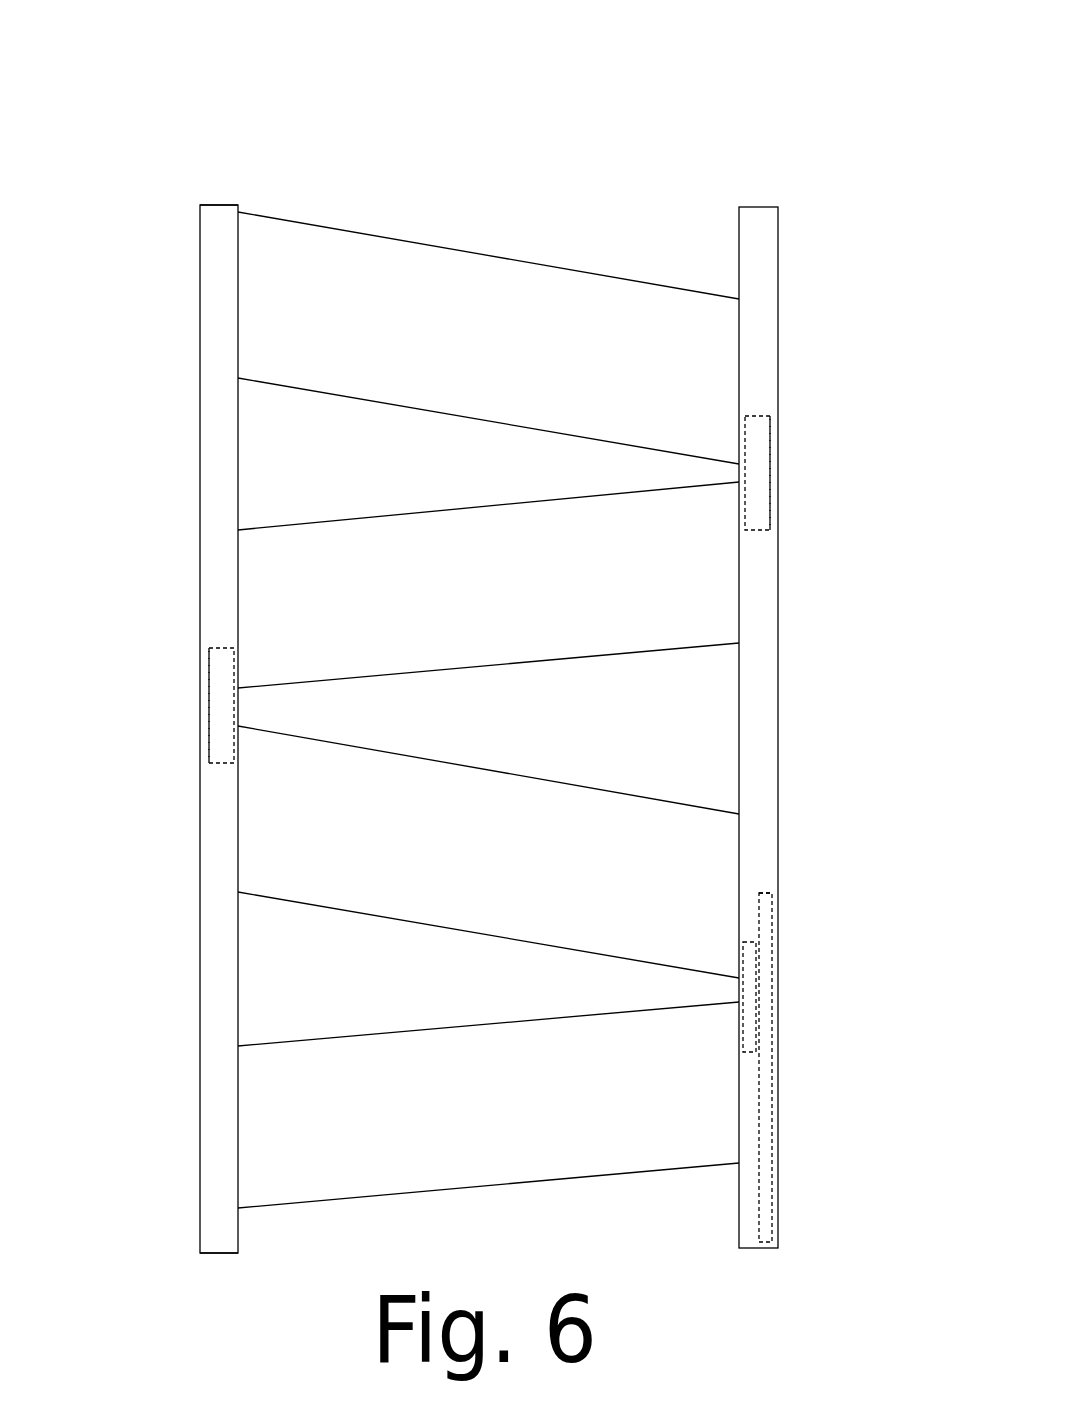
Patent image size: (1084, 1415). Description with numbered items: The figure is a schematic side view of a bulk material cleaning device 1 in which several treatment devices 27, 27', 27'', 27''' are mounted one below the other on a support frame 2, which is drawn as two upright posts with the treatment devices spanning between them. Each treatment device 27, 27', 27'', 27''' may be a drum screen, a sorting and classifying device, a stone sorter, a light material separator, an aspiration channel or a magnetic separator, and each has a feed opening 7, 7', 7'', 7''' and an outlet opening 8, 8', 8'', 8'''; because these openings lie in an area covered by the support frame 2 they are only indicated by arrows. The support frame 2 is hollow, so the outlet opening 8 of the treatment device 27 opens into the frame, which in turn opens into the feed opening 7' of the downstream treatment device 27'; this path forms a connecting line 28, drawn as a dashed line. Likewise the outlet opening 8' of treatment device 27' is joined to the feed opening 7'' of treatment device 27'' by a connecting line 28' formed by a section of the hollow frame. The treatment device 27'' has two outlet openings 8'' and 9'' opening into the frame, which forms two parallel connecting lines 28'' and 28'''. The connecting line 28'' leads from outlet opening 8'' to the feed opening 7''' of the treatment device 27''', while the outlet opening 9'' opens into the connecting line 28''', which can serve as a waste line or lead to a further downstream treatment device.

The bulk material cleaning device 1 is at (430, 162).
The support frame 2 is at (218, 282).
The feed opening 7 is at (174, 119).
The feed opening 7' is at (841, 561).
The feed opening 7'' is at (148, 781).
The feed opening 7''' is at (842, 1071).
The outlet opening 8 is at (830, 414).
The outlet opening 8' is at (154, 653).
The outlet opening 8'' is at (824, 962).
The outlet opening 8''' is at (160, 1154).
The outlet opening 9'' is at (832, 855).
The treatment device 27 is at (488, 338).
The treatment device 27' is at (488, 585).
The treatment device 27'' is at (488, 852).
The treatment device 27''' is at (488, 1105).
The connecting line 28 is at (827, 588).
The connecting line 28' is at (138, 700).
The connecting line 28'' is at (840, 1020).
The connecting line 28''' is at (850, 1067).